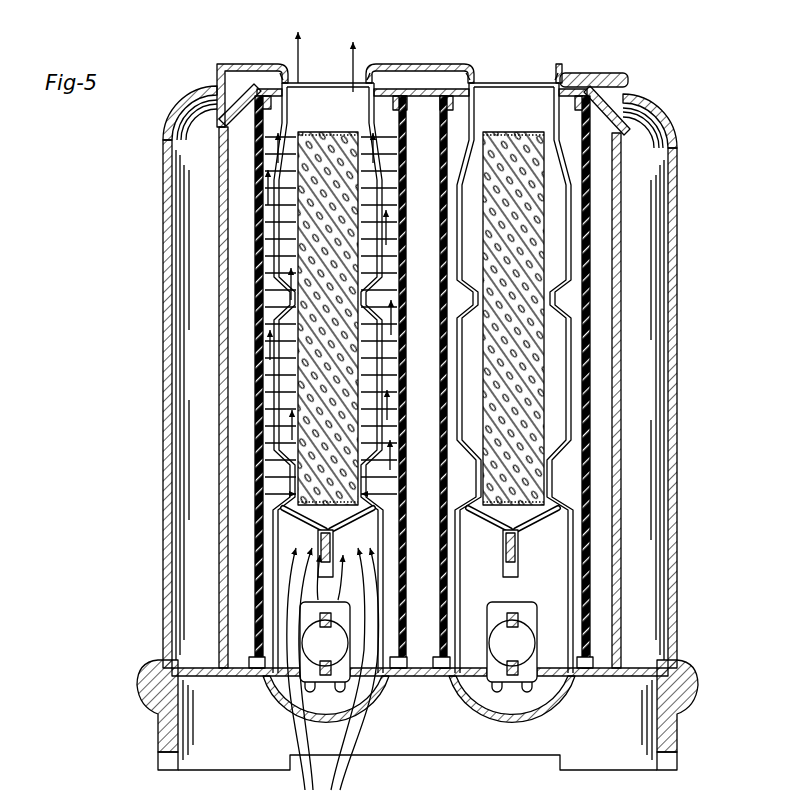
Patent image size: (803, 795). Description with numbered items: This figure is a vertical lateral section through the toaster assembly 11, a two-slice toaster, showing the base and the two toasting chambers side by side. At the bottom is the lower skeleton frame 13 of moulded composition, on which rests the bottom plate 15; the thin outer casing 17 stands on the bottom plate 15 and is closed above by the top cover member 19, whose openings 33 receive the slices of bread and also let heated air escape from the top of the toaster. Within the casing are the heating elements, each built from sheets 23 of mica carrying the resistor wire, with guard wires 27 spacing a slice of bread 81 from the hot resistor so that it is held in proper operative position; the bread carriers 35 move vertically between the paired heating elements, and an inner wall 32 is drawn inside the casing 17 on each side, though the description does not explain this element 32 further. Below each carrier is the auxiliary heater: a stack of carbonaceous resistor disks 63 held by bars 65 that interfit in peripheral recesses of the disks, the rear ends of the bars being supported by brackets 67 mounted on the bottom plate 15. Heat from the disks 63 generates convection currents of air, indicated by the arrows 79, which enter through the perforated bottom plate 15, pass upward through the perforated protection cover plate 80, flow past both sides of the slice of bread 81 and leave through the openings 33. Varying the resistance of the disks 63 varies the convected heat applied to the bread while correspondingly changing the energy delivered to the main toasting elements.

The toaster assembly 11 is at (112, 267).
The lower skeleton frame 13 is at (157, 717).
The bottom plate 15 is at (205, 678).
The outer casing 17 is at (163, 322).
The top cover member 19 is at (590, 78).
The sheets of electric insulating material 23 is at (253, 287).
The guard wires 27 is at (457, 203).
The inner wall 32 is at (219, 440).
The openings 33 is at (323, 72).
The bread carriers 35 is at (489, 521).
The resistor disks 63 is at (520, 650).
The bars 65 is at (515, 616).
The brackets 67 is at (496, 606).
The arrows 79 is at (292, 578).
The perforated protection cover plate 80 is at (366, 702).
The slice of bread 81 is at (333, 131).